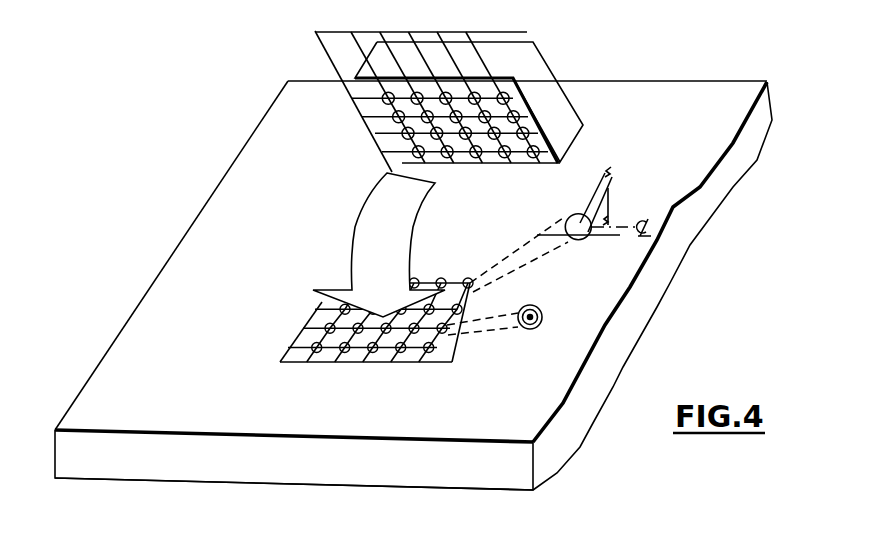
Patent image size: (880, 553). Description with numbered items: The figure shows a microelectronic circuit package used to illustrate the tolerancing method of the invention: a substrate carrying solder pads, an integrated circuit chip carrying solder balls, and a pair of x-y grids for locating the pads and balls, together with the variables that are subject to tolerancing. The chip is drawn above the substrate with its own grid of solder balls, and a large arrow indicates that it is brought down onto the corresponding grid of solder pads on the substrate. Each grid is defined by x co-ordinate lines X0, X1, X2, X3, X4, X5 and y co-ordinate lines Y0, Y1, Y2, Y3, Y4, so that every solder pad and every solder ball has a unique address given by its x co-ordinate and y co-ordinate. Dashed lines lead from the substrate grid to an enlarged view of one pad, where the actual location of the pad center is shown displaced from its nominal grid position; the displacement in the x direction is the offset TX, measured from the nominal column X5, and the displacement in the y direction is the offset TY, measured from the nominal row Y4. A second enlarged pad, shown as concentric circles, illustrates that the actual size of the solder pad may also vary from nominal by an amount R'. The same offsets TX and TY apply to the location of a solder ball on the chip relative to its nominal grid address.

The x co-ordinate grid line X0 is at (320, 19).
The x co-ordinate x1 X1 is at (345, 19).
The x co-ordinate x2 X2 is at (381, 19).
The x co-ordinate x3 X3 is at (415, 19).
The x co-ordinate x4 X4 is at (445, 19).
The x co-ordinate x5 X5 is at (477, 19).
The y co-ordinate grid line Y0 is at (318, 62).
The y co-ordinate y1 Y1 is at (350, 112).
The y co-ordinate y2 Y2 is at (365, 132).
The y co-ordinate y3 Y3 is at (373, 154).
The y co-ordinate y4 Y4 is at (615, 245).
The x-direction offset TX is at (575, 185).
The y-direction offset TY is at (621, 212).
The solder pad size variation R' is at (551, 318).